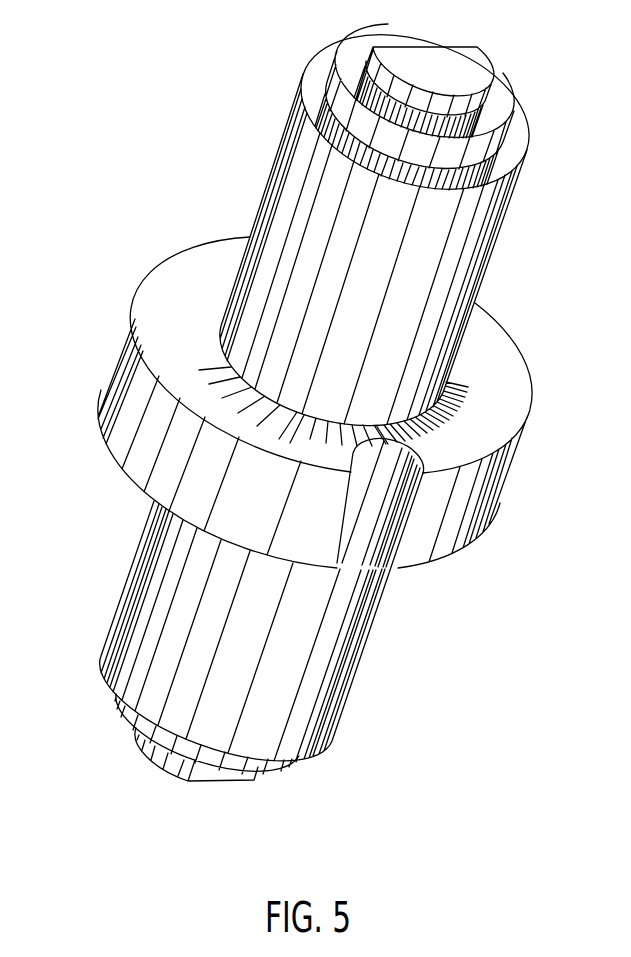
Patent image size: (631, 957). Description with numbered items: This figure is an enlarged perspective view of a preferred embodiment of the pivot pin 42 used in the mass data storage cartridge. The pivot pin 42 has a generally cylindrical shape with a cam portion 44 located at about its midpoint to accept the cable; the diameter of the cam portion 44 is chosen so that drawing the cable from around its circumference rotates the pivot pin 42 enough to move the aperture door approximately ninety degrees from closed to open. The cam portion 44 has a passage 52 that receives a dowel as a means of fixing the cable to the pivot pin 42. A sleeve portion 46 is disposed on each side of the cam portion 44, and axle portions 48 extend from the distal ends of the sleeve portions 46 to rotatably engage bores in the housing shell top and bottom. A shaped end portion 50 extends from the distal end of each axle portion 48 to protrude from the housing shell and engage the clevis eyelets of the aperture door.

The pivot pin 42 is at (182, 95).
The cam portion 44 is at (129, 384).
The sleeve portion 46 is at (285, 194).
The axle portion 48 is at (493, 155).
The shaped end portion 50 is at (486, 62).
The passage 52 is at (383, 510).